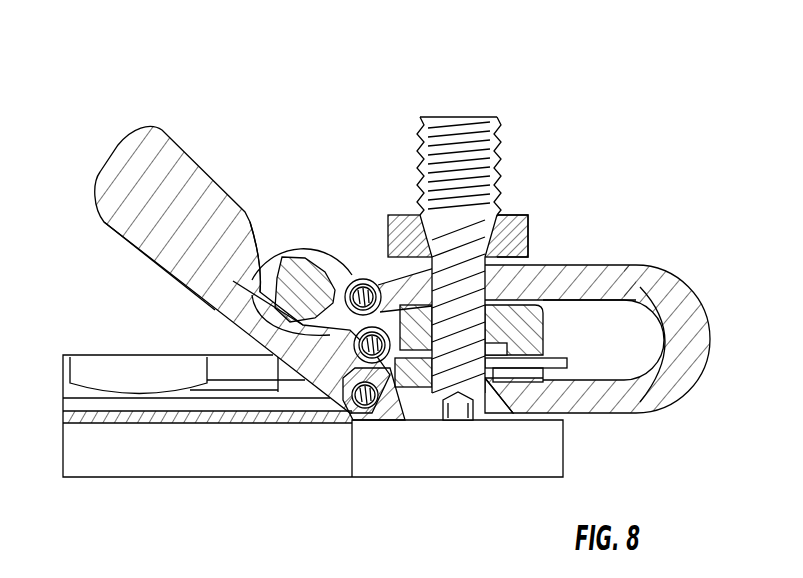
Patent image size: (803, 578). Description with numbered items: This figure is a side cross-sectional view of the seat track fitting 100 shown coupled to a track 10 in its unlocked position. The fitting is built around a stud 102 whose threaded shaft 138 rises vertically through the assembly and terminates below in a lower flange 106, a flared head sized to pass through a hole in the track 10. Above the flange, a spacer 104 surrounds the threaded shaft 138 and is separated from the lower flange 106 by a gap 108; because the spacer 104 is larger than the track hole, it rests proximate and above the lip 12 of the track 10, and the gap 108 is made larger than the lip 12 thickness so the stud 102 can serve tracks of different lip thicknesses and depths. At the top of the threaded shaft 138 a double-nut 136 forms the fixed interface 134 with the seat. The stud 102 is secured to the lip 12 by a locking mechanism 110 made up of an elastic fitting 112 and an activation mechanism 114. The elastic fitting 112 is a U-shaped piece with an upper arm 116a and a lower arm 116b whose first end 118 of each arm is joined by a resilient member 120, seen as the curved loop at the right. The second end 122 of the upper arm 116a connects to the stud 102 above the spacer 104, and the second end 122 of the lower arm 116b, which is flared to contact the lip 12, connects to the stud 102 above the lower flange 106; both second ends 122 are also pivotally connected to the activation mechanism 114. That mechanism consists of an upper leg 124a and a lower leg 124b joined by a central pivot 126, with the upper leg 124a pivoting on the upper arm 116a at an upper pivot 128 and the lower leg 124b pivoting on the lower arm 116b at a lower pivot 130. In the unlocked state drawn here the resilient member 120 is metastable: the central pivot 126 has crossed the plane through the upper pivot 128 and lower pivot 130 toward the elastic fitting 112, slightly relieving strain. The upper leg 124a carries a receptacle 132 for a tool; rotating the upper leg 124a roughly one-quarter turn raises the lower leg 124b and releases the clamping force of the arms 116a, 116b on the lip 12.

The seat track fitting 100 is at (180, 88).
The locking mechanism 110 is at (212, 244).
The activation mechanism 114 is at (148, 228).
The upper leg 124a is at (290, 258).
The lower leg 124b is at (190, 262).
The central pivot 126 is at (311, 260).
The upper pivot 128 is at (356, 284).
The second end 122 is at (375, 272).
The lower pivot 130 is at (357, 410).
The receptacle 132 is at (307, 300).
The threaded shaft 138 is at (420, 125).
The stud 102 is at (476, 294).
The double-nut 136 is at (400, 215).
The fixed interface 134 is at (513, 215).
The spacer 104 is at (562, 300).
The upper arm 116a is at (521, 255).
The lower arm 116b is at (620, 404).
The first end 118 is at (703, 308).
The resilient member 120 is at (697, 353).
The elastic fitting 112 is at (572, 363).
The lip 12 is at (546, 361).
The track 10 is at (205, 453).
The gap 108 is at (421, 418).
The lower flange 106 is at (487, 414).